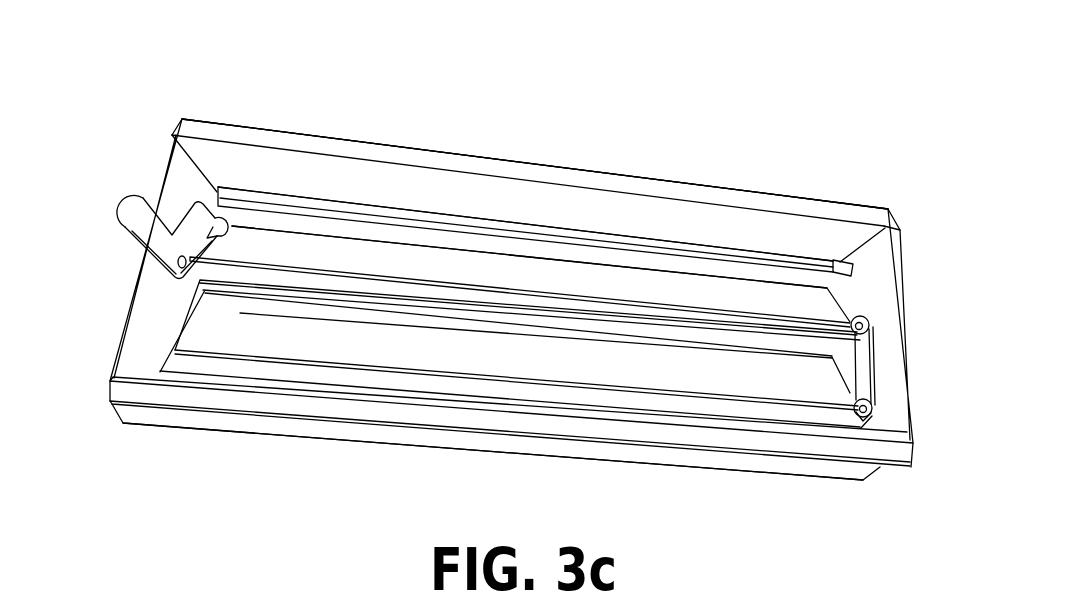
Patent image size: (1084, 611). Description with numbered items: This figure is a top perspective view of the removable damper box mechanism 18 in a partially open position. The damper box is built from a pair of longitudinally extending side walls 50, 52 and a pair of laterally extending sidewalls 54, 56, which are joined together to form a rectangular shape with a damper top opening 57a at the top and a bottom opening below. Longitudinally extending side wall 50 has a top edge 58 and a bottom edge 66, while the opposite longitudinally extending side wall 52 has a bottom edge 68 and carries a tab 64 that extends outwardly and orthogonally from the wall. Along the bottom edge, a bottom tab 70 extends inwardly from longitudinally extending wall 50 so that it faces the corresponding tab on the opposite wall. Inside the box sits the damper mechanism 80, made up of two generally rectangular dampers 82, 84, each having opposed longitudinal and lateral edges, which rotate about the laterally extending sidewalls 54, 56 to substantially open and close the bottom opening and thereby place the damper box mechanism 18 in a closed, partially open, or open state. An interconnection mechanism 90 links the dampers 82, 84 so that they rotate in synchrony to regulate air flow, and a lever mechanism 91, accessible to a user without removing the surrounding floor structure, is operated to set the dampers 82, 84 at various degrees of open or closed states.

The removable damper box mechanism 18 is at (734, 546).
The longitudinally extending side wall 50 is at (699, 213).
The longitudinally extending side wall 52 is at (138, 417).
The laterally extending sidewall 54 is at (142, 338).
The laterally extending sidewall 56 is at (877, 299).
The damper top opening 57a is at (358, 168).
The top edge 58 is at (505, 178).
The tab 64 is at (365, 402).
The bottom edge 66 is at (326, 193).
The bottom edge 68 is at (280, 437).
The bottom tab 70 is at (763, 258).
The damper mechanism 80 is at (288, 228).
The damper 82 is at (427, 267).
The damper 84 is at (557, 357).
The interconnection mechanism 90 is at (863, 377).
The lever mechanism 91 is at (127, 210).